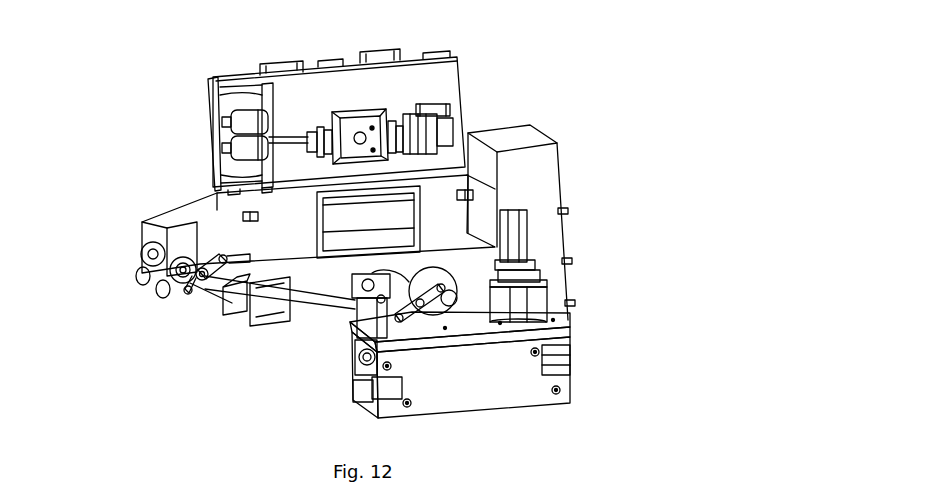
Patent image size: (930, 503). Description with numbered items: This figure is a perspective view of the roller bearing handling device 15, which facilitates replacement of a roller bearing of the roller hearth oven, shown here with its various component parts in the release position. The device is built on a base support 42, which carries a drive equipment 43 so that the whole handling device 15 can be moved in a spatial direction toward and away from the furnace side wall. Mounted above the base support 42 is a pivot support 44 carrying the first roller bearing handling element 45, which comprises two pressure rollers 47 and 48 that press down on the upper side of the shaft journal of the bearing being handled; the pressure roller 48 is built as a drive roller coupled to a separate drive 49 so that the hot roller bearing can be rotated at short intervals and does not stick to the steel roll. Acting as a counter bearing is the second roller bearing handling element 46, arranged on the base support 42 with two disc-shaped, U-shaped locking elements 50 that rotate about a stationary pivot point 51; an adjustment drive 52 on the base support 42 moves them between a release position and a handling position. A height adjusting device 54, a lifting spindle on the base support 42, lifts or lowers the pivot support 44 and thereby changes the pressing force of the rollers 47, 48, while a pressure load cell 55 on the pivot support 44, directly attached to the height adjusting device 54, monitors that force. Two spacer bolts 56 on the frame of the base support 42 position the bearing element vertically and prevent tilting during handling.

The roller bearing handling device 15 is at (491, 74).
The base support 42 is at (587, 322).
The drive equipment 43 is at (530, 308).
The pivot support 44 is at (190, 215).
The first roller bearing handling element 45 is at (245, 96).
The second roller bearing handling element 46 is at (126, 242).
The pressure roller 47 is at (243, 123).
The pressure roller 48 is at (247, 153).
The drive 49 is at (363, 108).
The locking element 50 is at (152, 243).
The pivot point 51 is at (193, 293).
The adjustment drive 52 is at (413, 320).
The height adjusting device 54 is at (350, 303).
The pressure load cell 55 is at (397, 217).
The spacer bolt 56 is at (141, 285).